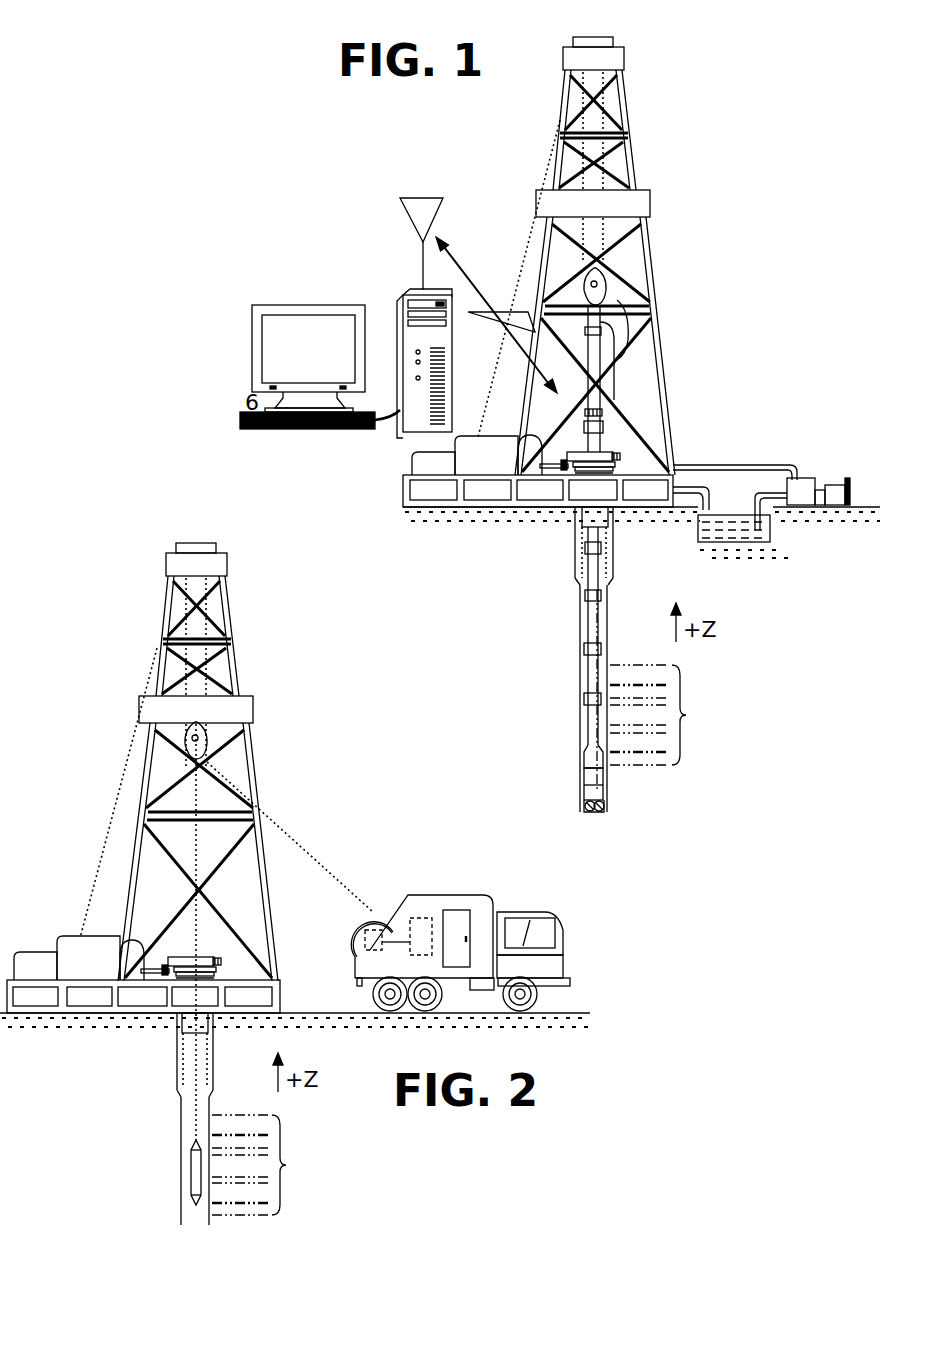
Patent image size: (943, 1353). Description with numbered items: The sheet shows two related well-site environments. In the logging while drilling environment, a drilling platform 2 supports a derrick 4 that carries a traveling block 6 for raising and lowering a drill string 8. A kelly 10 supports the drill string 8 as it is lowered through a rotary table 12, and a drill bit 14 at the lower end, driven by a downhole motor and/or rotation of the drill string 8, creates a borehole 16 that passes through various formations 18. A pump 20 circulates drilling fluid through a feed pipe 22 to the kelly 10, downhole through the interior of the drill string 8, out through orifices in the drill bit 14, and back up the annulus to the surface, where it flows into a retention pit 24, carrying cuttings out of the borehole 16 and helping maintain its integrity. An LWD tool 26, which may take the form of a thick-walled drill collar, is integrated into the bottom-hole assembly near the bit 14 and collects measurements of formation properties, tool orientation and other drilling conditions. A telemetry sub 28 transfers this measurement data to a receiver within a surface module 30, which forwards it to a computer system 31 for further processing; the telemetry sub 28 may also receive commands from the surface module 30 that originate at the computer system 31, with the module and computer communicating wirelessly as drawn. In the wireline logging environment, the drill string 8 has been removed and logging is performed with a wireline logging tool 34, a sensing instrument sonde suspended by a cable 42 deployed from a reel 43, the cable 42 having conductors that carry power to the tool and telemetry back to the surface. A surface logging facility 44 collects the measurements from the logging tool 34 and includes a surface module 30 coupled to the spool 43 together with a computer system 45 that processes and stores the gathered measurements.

In FIG. 1, the drilling platform 2 is at (403, 484).
In FIG. 2, the drilling platform 2 is at (282, 992).
In FIG. 1, the derrick 4 is at (632, 162).
In FIG. 2, the derrick 4 is at (267, 945).
In FIG. 1, the traveling block 6 is at (602, 281).
In FIG. 2, the traveling block 6 is at (203, 740).
In FIG. 1, the drill string 8 is at (597, 630).
In FIG. 1, the kelly 10 is at (593, 348).
In FIG. 1, the rotary table 12 is at (613, 448).
In FIG. 2, the rotary table 12 is at (210, 957).
In FIG. 1, the drill bit 14 is at (606, 804).
In FIG. 1, the borehole 16 is at (607, 635).
In FIG. 2, the borehole 16 is at (195, 1119).
In FIG. 1, the formations 18 is at (664, 715).
In FIG. 2, the formations 18 is at (265, 1165).
In FIG. 1, the pump 20 is at (798, 480).
In FIG. 1, the feed pipe 22 is at (743, 463).
In FIG. 1, the retention pit 24 is at (712, 537).
In FIG. 1, the LWD tool 26 is at (587, 780).
In FIG. 1, the telemetry sub 28 is at (587, 757).
In FIG. 1, the surface module 30 is at (600, 412).
In FIG. 2, the surface module 30 is at (383, 935).
In FIG. 1, the computer system 31 is at (396, 290).
In FIG. 2, the wireline logging tool 34 is at (193, 1165).
In FIG. 2, the cable 42 is at (291, 800).
In FIG. 2, the reel 43 is at (355, 945).
In FIG. 2, the surface logging facility 44 is at (482, 895).
In FIG. 2, the computer system 45 is at (416, 922).